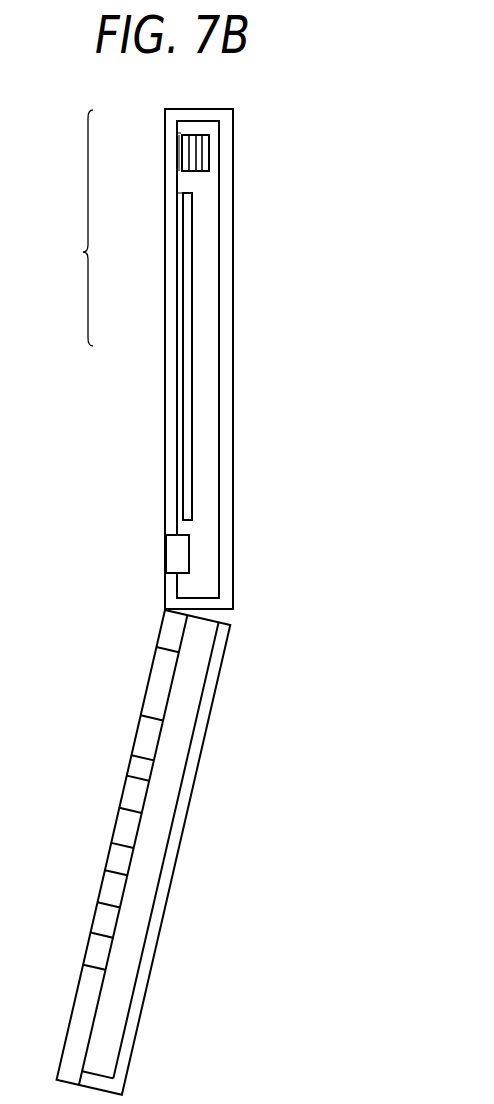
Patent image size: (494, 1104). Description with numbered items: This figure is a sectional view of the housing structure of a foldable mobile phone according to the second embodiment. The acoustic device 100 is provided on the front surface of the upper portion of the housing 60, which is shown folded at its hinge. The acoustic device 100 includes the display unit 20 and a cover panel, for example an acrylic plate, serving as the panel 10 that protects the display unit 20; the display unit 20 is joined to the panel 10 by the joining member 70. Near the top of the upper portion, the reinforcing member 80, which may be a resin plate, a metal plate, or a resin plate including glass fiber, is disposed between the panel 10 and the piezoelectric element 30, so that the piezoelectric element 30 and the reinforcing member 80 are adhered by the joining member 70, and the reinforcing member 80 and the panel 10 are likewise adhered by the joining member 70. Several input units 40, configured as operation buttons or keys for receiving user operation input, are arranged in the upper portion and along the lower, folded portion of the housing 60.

The acoustic device 100 is at (65, 228).
The panel 10 is at (172, 248).
The display unit 20 is at (188, 331).
The piezoelectric element 30 is at (206, 171).
The input unit 40 is at (170, 551).
The housing 60 is at (227, 182).
The joining member 70 is at (193, 135).
The reinforcing member 80 is at (189, 158).